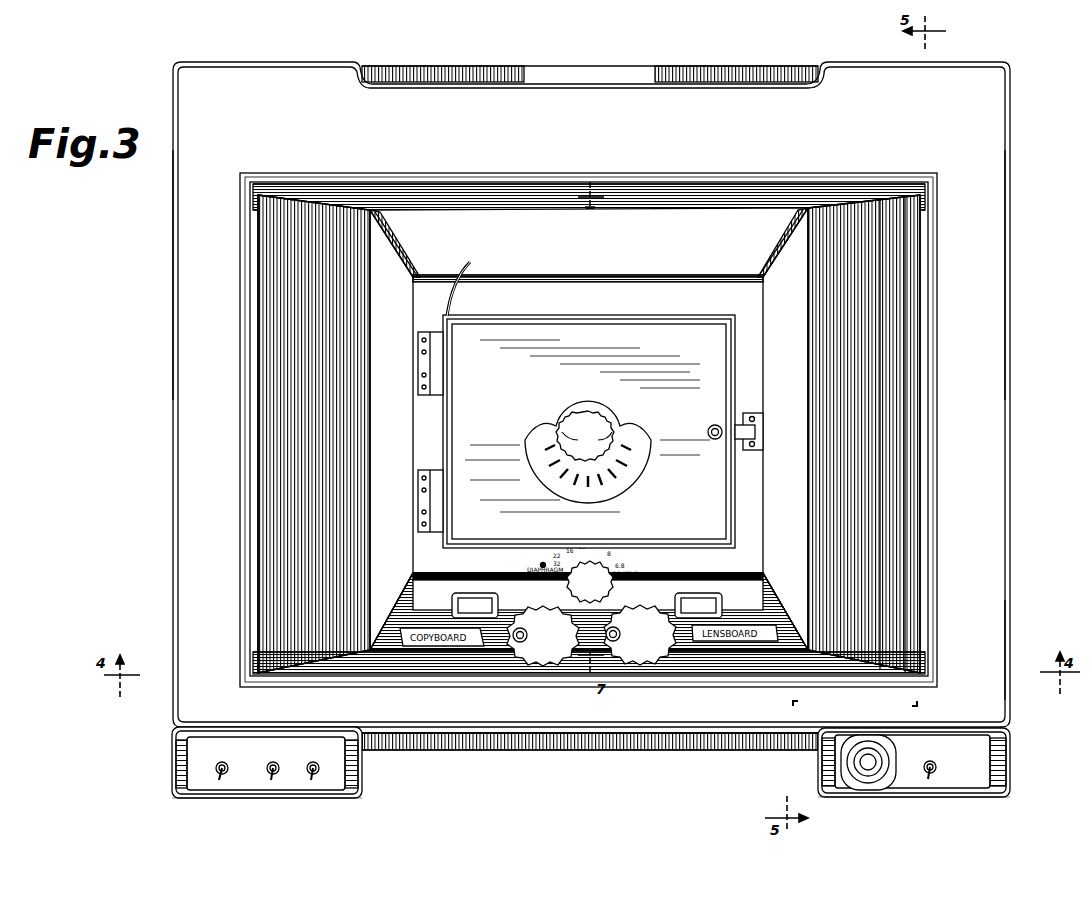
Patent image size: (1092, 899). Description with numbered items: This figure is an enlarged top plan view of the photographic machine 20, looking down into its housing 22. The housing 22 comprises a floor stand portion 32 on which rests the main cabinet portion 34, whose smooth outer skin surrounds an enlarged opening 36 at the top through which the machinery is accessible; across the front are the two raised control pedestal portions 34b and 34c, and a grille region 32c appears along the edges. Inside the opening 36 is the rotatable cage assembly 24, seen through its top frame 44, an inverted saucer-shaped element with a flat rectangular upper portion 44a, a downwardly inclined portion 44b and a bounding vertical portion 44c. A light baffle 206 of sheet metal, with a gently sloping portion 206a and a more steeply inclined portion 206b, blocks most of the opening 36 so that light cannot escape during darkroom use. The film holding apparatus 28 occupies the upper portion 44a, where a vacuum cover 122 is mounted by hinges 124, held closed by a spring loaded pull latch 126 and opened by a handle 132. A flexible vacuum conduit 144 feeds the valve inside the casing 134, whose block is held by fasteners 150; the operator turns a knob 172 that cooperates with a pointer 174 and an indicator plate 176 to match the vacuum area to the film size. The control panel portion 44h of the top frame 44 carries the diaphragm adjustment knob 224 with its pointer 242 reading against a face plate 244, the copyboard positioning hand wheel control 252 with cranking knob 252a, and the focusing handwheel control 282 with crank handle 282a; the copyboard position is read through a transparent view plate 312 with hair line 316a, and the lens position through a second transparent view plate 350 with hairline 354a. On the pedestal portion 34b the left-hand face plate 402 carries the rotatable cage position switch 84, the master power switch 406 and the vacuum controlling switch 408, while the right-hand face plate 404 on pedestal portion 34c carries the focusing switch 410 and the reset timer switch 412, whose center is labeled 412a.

The photographic machine 20 is at (148, 378).
The housing 22 is at (1008, 650).
The rotatable cage assembly 24 is at (538, 190).
The film holding apparatus 28 is at (708, 300).
The floor stand portion 32 is at (477, 750).
The ventilation grille 32c is at (613, 64).
The main cabinet portion 34 is at (178, 289).
The control pedestal portion 34b is at (362, 790).
The control pedestal portion 34c is at (1010, 771).
The enlarged opening 36 is at (930, 268).
The top frame 44 is at (740, 215).
The upper portion 44a is at (660, 288).
The inclined portion 44b is at (635, 222).
The vertical portion 44c is at (370, 558).
The control panel portion 44h is at (652, 585).
The rotatable cage position switch 84 is at (311, 782).
The vacuum cover 122 is at (606, 298).
The hinges 124 is at (428, 335).
The spring loaded pull latch 126 is at (745, 420).
The handle 132 is at (713, 440).
The casing 134 is at (705, 355).
The flexible vacuum conduit 144 is at (472, 262).
The fasteners 150 is at (625, 422).
The knob 172 is at (572, 436).
The pointer 174 is at (612, 440).
The indicator plate 176 is at (636, 462).
The light baffle 206 is at (895, 303).
The sloping portion 206a is at (890, 355).
The inclined portion 206b is at (915, 393).
The diaphragm adjustment knob 224 is at (585, 562).
The pointer 242 is at (625, 575).
The face plate 244 is at (555, 565).
The copyboard positioning hand wheel control 252 is at (563, 642).
The cranking knob 252a is at (520, 642).
The focusing handwheel control 282 is at (658, 641).
The crank handle 282a is at (618, 641).
The transparent view plate 312 is at (490, 600).
The hair line 316a is at (470, 603).
The transparent view plate 350 is at (690, 600).
The hairline 354a is at (702, 605).
The left-hand face plate 402 is at (195, 762).
The right-hand face plate 404 is at (963, 778).
The master power switch 406 is at (220, 782).
The vacuum controlling switch 408 is at (272, 782).
The focusing switch 410 is at (928, 781).
The reset timer switch 412 is at (868, 785).
The focus knob center 412a is at (860, 764).